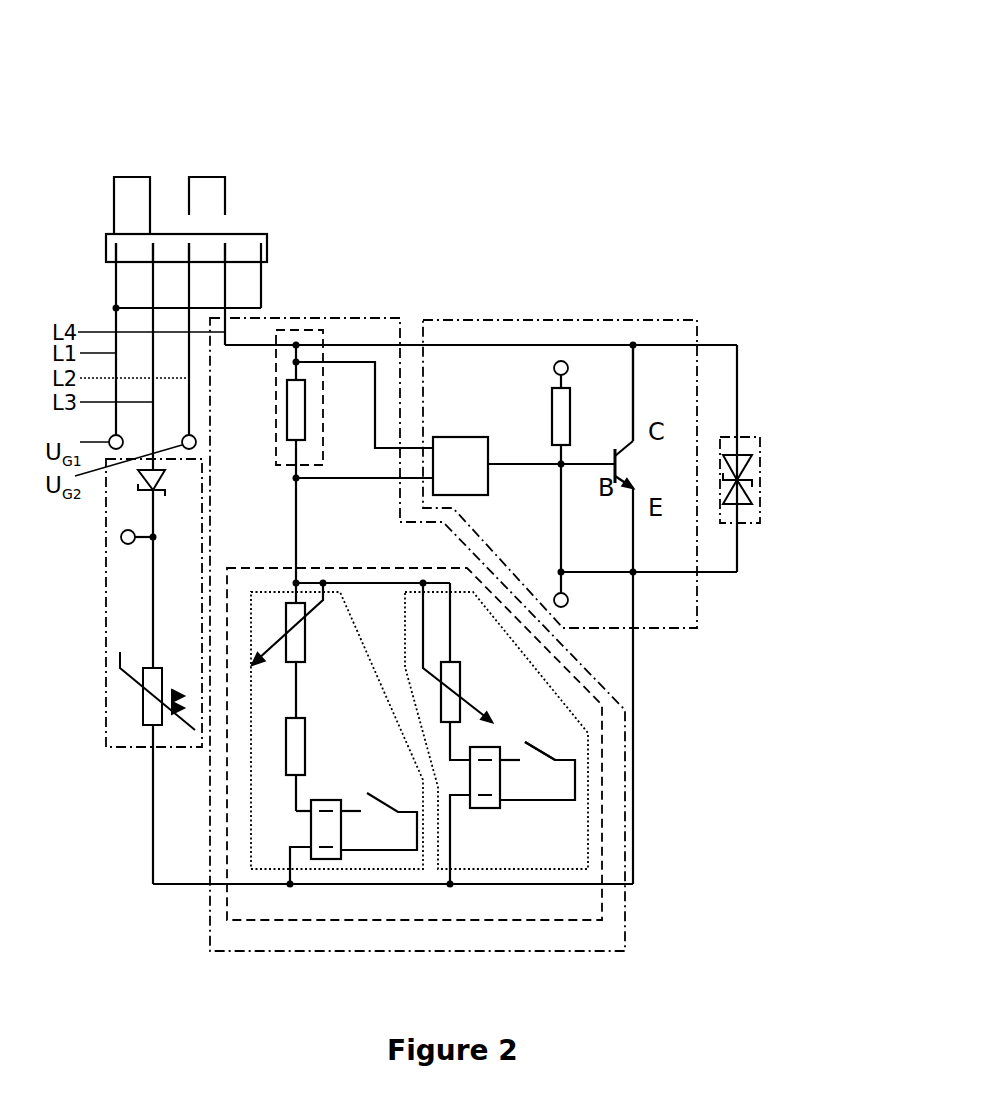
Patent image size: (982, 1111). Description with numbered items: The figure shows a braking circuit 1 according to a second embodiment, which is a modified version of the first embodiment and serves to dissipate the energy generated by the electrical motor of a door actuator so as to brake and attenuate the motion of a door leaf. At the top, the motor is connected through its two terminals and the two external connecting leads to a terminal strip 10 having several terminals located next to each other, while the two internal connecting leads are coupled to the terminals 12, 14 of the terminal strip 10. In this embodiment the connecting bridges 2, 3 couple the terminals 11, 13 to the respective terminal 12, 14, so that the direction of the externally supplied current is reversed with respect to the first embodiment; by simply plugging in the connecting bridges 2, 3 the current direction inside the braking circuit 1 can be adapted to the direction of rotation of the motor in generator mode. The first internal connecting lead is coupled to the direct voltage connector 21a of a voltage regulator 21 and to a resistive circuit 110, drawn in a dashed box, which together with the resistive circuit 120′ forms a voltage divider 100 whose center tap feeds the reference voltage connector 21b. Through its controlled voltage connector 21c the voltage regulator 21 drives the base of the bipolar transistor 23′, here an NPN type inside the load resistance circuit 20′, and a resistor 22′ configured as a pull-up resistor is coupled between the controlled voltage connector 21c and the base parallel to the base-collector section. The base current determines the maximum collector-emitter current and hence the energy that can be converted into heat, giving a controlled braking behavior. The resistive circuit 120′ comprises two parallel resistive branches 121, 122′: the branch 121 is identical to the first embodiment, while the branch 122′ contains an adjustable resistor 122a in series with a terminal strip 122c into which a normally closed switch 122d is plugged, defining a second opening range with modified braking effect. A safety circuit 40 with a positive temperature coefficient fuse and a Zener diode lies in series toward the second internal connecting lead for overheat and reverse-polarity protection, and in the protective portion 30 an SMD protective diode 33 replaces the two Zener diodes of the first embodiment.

The braking circuit 1 is at (98, 53).
The connecting bridge 2 is at (145, 177).
The connecting bridge 3 is at (212, 177).
The terminal strip 10 is at (259, 234).
The terminal 11 is at (113, 250).
The terminal 12 is at (152, 248).
The terminal 13 is at (188, 248).
The terminal 14 is at (224, 248).
The voltage divider 100 is at (341, 318).
The resistive circuit 110 is at (294, 330).
The load resistance circuit 20′ is at (513, 320).
The voltage regulator 21 is at (460, 466).
The direct voltage connector 21a is at (431, 432).
The reference voltage connector 21b is at (445, 485).
The controlled voltage connector 21c is at (495, 452).
The resistor 22′ is at (571, 387).
The bipolar transistor 23′ is at (633, 345).
The protective diode circuit 30 is at (752, 435).
The SMD protective diode 33 is at (768, 450).
The safety circuit 40 is at (106, 575).
The resistive circuit 120′ is at (565, 663).
The resistive branch 121 is at (425, 853).
The resistive branch 122′ is at (588, 846).
The adjustable resistor 122a is at (462, 685).
The terminal strip 122c is at (497, 788).
The switch 122d is at (553, 748).